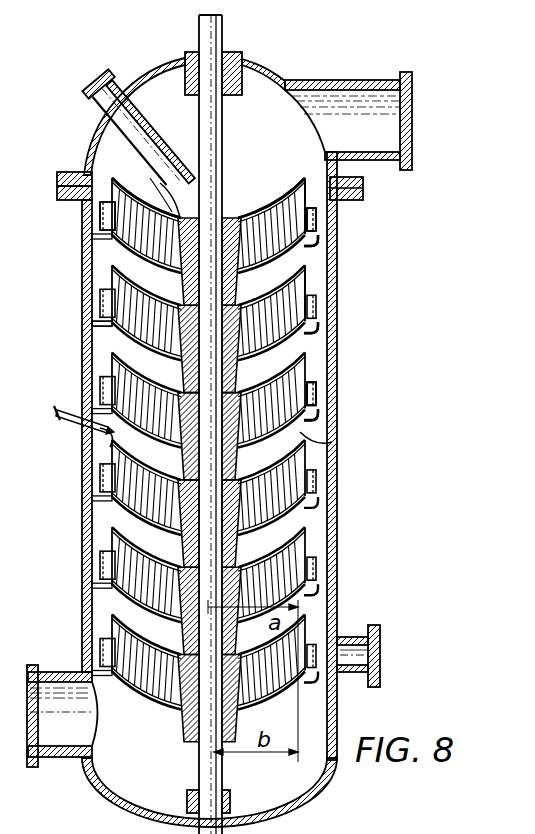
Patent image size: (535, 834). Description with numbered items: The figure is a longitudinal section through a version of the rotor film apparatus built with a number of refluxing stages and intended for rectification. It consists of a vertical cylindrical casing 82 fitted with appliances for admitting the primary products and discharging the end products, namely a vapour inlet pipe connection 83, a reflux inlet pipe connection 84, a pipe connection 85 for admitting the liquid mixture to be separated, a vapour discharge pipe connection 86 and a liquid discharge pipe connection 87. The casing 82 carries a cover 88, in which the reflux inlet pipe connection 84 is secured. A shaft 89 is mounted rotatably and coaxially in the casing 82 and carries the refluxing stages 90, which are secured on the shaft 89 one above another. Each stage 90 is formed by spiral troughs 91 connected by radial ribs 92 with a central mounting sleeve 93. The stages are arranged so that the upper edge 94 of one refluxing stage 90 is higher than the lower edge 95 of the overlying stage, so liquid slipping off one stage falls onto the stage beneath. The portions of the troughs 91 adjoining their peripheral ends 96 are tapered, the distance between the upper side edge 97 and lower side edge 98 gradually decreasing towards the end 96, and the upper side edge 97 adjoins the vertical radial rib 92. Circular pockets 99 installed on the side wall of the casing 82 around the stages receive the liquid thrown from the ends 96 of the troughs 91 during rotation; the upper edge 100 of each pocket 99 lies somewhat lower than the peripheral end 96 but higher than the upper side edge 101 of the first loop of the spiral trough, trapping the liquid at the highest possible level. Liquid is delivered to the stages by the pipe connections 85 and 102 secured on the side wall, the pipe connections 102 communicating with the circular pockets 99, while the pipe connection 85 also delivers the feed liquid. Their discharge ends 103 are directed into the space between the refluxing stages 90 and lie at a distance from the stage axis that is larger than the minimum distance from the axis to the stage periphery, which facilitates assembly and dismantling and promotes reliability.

The vertical cylindrical casing 82 is at (338, 307).
The vapour inlet pipe connection 83 is at (34, 768).
The reflux inlet pipe connection 84 is at (100, 75).
The pipe connection for admitting the liquid mixture 85 is at (67, 403).
The vapour discharge pipe connection 86 is at (367, 82).
The liquid discharge pipe connection 87 is at (375, 625).
The cover 88 is at (140, 80).
The shaft 89 is at (203, 35).
The refluxing stage 90 is at (263, 195).
The spiral trough 91 is at (127, 214).
The radial rib 92 is at (288, 182).
The central mounting sleeve 93 is at (163, 187).
The upper edge of refluxing stage 94 is at (311, 264).
The lower edge of refluxing stage 95 is at (321, 334).
The peripheral end of trough 96 is at (364, 190).
The upper side edge of trough 97 is at (308, 187).
The lower side edge of trough 98 is at (323, 246).
The circular pocket 99 is at (335, 393).
The upper edge of circular pocket 100 is at (337, 208).
The upper side edge of first loop of spiral trough 101 is at (246, 218).
The pipe connection 102 is at (337, 432).
The discharge end 103 is at (332, 442).